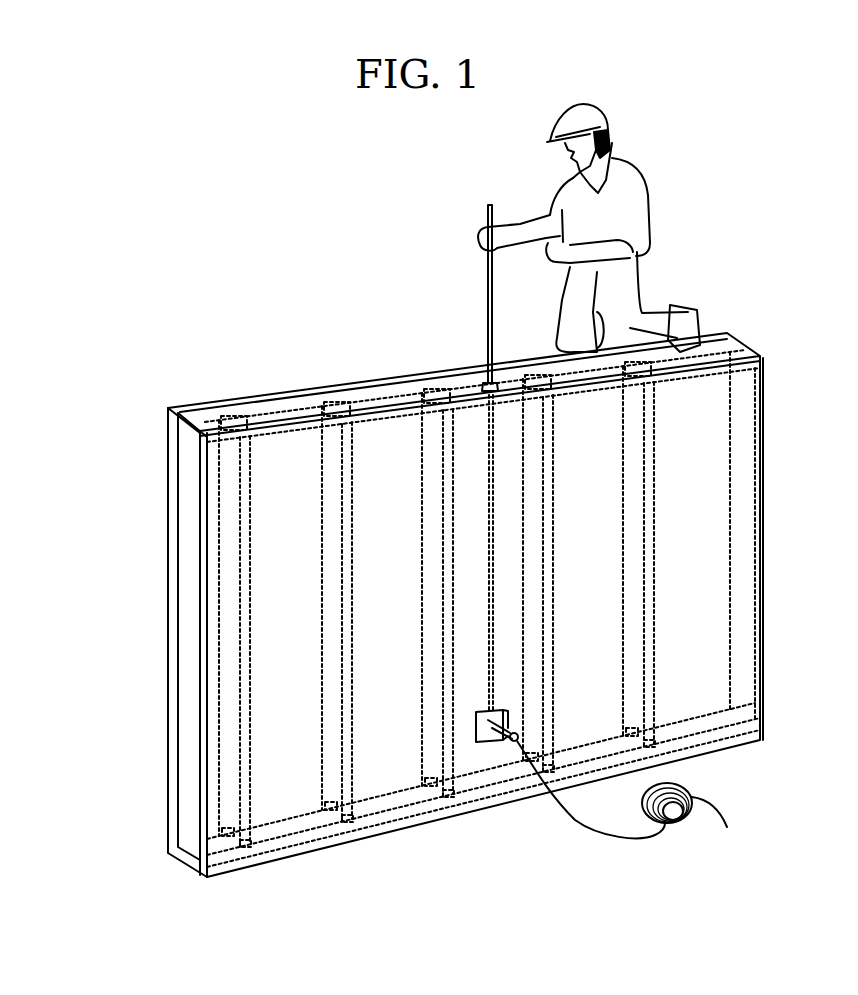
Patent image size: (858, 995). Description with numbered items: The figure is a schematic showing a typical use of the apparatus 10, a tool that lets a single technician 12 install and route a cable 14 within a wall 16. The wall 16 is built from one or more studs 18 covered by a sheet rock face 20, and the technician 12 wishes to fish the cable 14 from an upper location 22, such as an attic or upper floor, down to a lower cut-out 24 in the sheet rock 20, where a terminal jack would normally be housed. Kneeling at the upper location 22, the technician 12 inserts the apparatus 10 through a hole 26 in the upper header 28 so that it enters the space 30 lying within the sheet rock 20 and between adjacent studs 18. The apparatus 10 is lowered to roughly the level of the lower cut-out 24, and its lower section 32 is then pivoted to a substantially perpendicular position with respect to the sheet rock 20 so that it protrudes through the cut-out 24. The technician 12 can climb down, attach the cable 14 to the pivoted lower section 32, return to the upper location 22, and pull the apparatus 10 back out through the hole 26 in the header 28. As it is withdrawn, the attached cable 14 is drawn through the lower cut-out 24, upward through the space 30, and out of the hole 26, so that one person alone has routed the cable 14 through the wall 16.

The apparatus 10 is at (471, 494).
The technician 12 is at (632, 170).
The cable 14 is at (693, 821).
The wall 16 is at (434, 591).
The studs 18 is at (239, 398).
The sheet rock face 20 is at (173, 635).
The upper location 22 is at (468, 296).
The lower cut-out 24 is at (480, 740).
The hole 26 is at (487, 382).
The upper header 28 is at (199, 426).
The space 30 is at (512, 518).
The lower section 32 is at (506, 740).